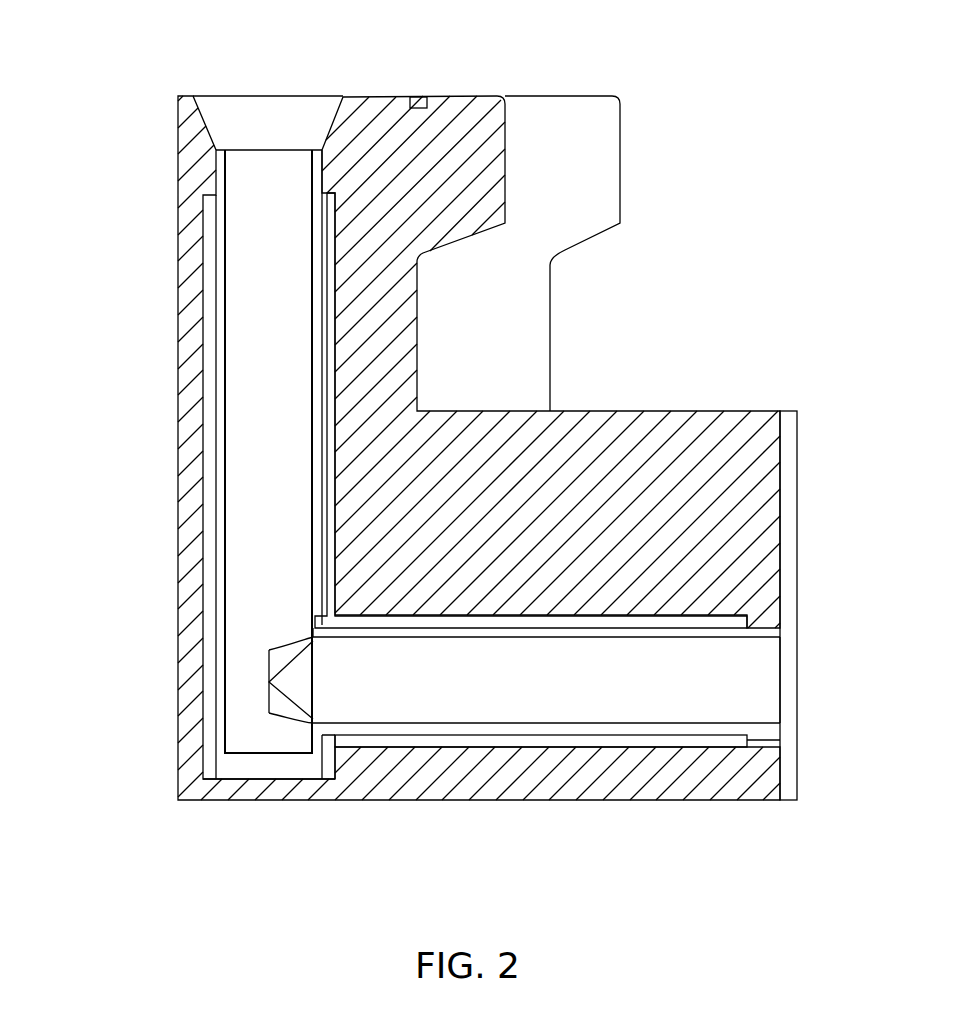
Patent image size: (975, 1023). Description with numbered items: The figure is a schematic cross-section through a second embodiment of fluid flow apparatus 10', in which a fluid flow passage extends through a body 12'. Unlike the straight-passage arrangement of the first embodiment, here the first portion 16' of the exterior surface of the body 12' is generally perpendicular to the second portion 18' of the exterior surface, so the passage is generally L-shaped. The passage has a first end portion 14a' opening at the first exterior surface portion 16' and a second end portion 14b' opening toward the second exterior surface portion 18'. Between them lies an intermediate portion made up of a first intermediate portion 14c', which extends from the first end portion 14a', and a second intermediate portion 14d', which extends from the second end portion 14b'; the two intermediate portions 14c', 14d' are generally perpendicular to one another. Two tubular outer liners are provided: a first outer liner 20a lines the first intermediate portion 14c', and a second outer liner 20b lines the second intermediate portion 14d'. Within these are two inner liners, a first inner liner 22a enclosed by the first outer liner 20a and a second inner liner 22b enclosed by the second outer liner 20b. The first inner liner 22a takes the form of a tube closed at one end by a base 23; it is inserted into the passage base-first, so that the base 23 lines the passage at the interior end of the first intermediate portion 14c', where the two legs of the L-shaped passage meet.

The fluid flow apparatus 10' is at (407, 448).
The body 12' is at (551, 362).
The first end portion of the passage 14a' is at (268, 109).
The second end portion of the passage 14b' is at (749, 765).
The first intermediate portion of the passage 14c' is at (180, 451).
The second intermediate portion of the passage 14d' is at (524, 765).
The first portion of the exterior surface of the body 16' is at (489, 211).
The second portion of the exterior surface of the body 18' is at (841, 605).
The first outer liner 20a is at (328, 308).
The second outer liner 20b is at (532, 740).
The first inner liner 22a is at (220, 233).
The second inner liner 22b is at (392, 730).
The base 23 is at (268, 768).